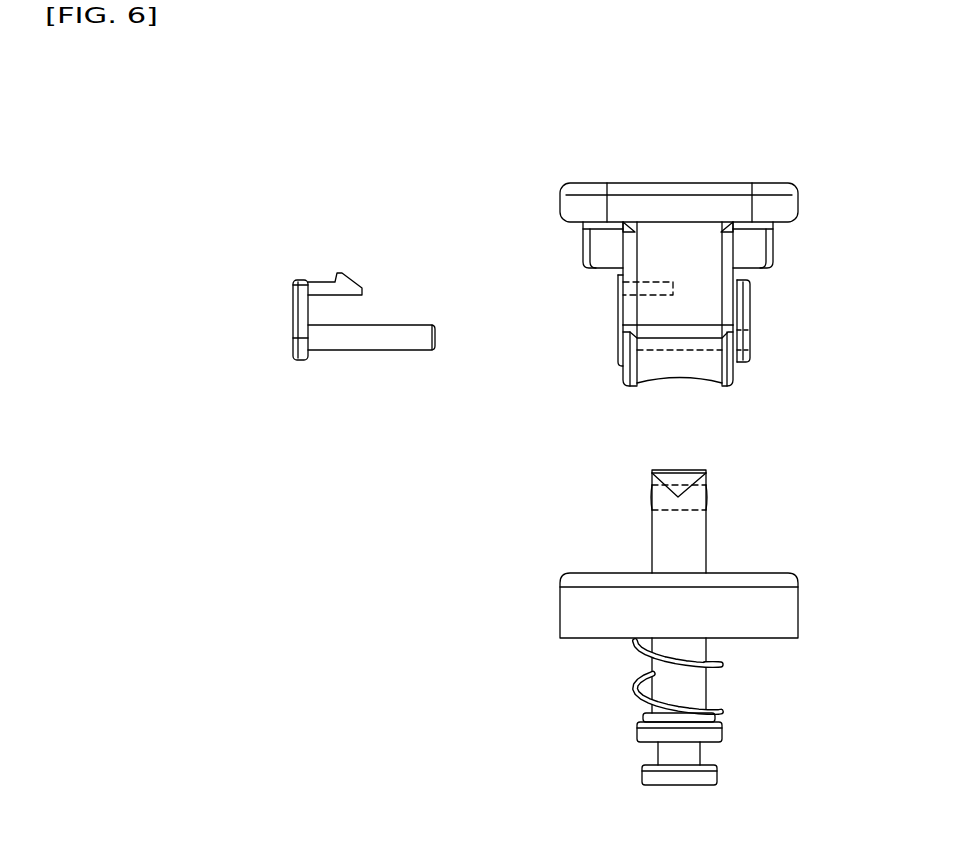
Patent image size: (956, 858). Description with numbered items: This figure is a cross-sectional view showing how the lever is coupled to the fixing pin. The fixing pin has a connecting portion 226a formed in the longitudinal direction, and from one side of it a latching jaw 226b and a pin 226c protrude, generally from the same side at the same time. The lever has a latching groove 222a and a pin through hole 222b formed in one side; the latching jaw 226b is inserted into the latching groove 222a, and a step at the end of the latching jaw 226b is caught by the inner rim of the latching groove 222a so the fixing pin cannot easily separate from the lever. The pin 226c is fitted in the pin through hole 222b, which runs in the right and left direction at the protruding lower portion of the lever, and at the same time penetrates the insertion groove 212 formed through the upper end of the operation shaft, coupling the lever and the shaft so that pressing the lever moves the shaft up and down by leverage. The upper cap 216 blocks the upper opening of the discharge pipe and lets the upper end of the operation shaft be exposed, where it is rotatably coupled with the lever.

The insertion groove 212 is at (652, 500).
The upper cap 216 is at (560, 615).
The latching groove 222a is at (647, 282).
The pin through hole 222b is at (705, 343).
The connecting portion 226a is at (293, 312).
The latching jaw 226b is at (322, 280).
The pin 226c is at (343, 350).